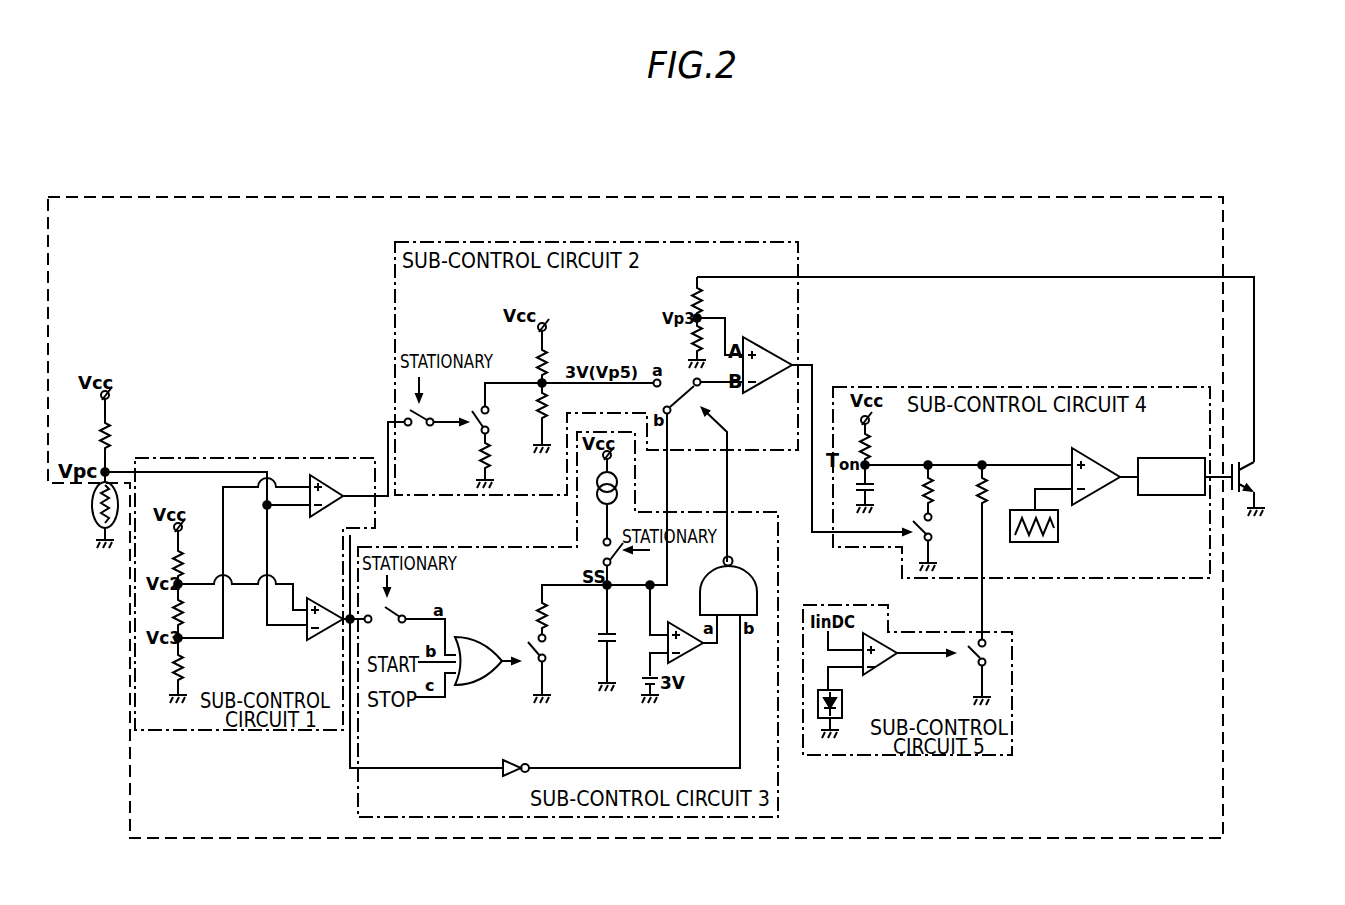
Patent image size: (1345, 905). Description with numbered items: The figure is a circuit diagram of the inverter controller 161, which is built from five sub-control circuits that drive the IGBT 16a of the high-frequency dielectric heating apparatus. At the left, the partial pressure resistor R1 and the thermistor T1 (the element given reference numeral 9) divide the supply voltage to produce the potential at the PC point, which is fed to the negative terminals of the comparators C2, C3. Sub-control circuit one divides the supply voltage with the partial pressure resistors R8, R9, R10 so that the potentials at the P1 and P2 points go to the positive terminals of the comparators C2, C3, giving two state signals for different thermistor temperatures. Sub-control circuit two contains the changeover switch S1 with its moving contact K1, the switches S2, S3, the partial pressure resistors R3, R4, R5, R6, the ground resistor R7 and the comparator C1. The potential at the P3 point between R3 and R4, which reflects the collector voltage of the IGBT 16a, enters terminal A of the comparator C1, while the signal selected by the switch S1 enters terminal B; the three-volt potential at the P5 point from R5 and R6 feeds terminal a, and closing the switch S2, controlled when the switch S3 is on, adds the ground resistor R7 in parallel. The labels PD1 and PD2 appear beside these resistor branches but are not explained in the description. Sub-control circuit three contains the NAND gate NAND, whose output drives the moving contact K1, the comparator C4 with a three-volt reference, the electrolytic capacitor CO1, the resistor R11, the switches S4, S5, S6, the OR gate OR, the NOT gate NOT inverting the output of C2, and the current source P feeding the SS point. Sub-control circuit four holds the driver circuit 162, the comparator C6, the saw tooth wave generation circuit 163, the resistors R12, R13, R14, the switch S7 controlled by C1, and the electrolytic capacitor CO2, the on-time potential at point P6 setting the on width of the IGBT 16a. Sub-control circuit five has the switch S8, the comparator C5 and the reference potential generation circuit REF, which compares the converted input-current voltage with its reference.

The inverter controller 161 is at (943, 197).
The driver circuit 162 is at (1170, 458).
The saw tooth wave generation circuit 163 is at (1058, 527).
The IGBT 16a is at (1262, 464).
The thermistor 9 is at (97, 530).
The thermistor T1 is at (87, 505).
The PC point PC is at (108, 470).
The partial pressure resistor R1 is at (80, 435).
The partial pressure resistor R3 is at (715, 300).
The partial pressure resistor R4 is at (683, 338).
The partial pressure resistor R5 is at (529, 362).
The partial pressure resistor R6 is at (529, 404).
The ground resistor R7 is at (471, 456).
The partial pressure resistor R8 is at (195, 563).
The partial pressure resistor R9 is at (195, 612).
The partial pressure resistor R10 is at (202, 667).
The resistor R11 is at (524, 615).
The resistor R12 is at (889, 446).
The resistor R13 is at (952, 490).
The resistor R14 is at (1006, 490).
The comparator C1 is at (767, 364).
The comparator C2 is at (326, 609).
The comparator C3 is at (329, 489).
The comparator C4 is at (681, 631).
The comparator C5 is at (890, 659).
The comparator C6 is at (1098, 473).
The changeover switch S1 is at (704, 396).
The switch S2 is at (494, 420).
The switch S3 is at (438, 431).
The switch S4 is at (395, 606).
The switch S5 is at (531, 664).
The switch S6 is at (624, 561).
The switch S7 is at (940, 527).
The switch S8 is at (970, 664).
The P1 point P1 is at (176, 583).
The P2 point P2 is at (177, 641).
The P3 point P3 is at (694, 318).
The P5 point P5 is at (546, 387).
The point P6 is at (855, 422).
The current source P is at (592, 500).
The pull-down circuit PD1 is at (578, 406).
The pull-down circuit PD2 is at (523, 463).
The moving contact K1 is at (683, 401).
The electrolytic capacitor CO1 is at (589, 639).
The electrolytic capacitor CO2 is at (888, 496).
The OR gate circuit OR is at (478, 661).
The NAND gate circuit NAND is at (728, 586).
The NOT gate circuit NOT is at (526, 758).
The reference potential generation circuit REF is at (853, 704).